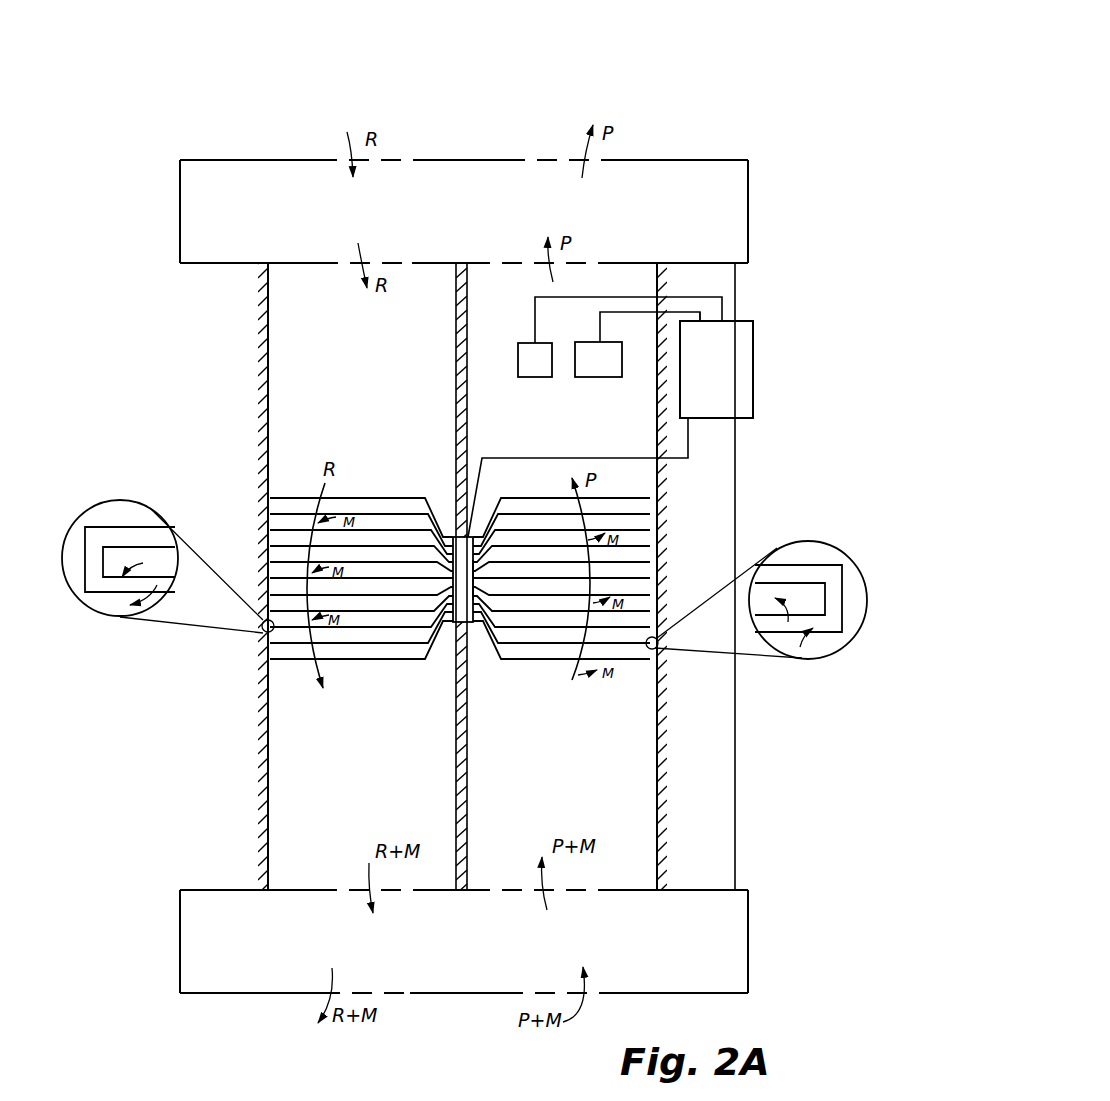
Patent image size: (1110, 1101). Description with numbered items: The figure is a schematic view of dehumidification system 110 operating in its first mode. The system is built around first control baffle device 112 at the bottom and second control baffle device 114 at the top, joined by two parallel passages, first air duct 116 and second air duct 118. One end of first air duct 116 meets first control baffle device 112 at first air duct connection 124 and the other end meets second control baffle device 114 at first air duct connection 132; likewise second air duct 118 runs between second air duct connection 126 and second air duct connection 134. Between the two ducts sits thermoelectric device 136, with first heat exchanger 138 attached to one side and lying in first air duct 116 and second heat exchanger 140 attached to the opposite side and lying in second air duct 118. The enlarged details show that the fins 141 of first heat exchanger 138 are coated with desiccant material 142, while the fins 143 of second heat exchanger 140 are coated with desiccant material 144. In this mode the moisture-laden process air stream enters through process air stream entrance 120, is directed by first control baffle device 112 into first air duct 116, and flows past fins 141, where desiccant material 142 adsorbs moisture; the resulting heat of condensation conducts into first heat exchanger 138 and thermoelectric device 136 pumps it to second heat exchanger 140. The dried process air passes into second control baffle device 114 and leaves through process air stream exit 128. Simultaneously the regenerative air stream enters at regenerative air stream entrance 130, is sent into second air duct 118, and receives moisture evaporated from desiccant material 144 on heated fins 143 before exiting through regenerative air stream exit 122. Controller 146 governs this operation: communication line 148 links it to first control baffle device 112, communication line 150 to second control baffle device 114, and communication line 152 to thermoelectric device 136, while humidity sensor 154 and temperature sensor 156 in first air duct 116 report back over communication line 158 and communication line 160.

The dehumidification system 110 is at (723, 97).
The first control baffle device 112 is at (745, 890).
The second control baffle device 114 is at (750, 190).
The first air duct 116 is at (632, 745).
The second air duct 118 is at (313, 777).
The process air stream entrance 120 is at (603, 993).
The regenerative air stream exit 122 is at (312, 992).
The first air duct connection 124 is at (573, 890).
The second air duct connection 126 is at (343, 890).
The process air stream exit 128 is at (617, 162).
The regenerative air stream entrance 130 is at (333, 162).
The first air duct connection 132 is at (575, 263).
The second air duct connection 134 is at (353, 263).
The thermoelectric device 136 is at (460, 625).
The first heat exchanger 138 is at (476, 623).
The second heat exchanger 140 is at (449, 623).
The fins 141 is at (800, 592).
The desiccant material 142 is at (756, 586).
The fins 143 is at (132, 555).
The desiccant material 144 is at (161, 554).
The controller 146 is at (755, 402).
The communication line 148 is at (735, 497).
The communication line 150 is at (735, 273).
The communication line 152 is at (688, 447).
The humidity sensor 154 is at (580, 377).
The temperature sensor 156 is at (533, 377).
The communication line 158 is at (702, 318).
The communication line 160 is at (724, 297).